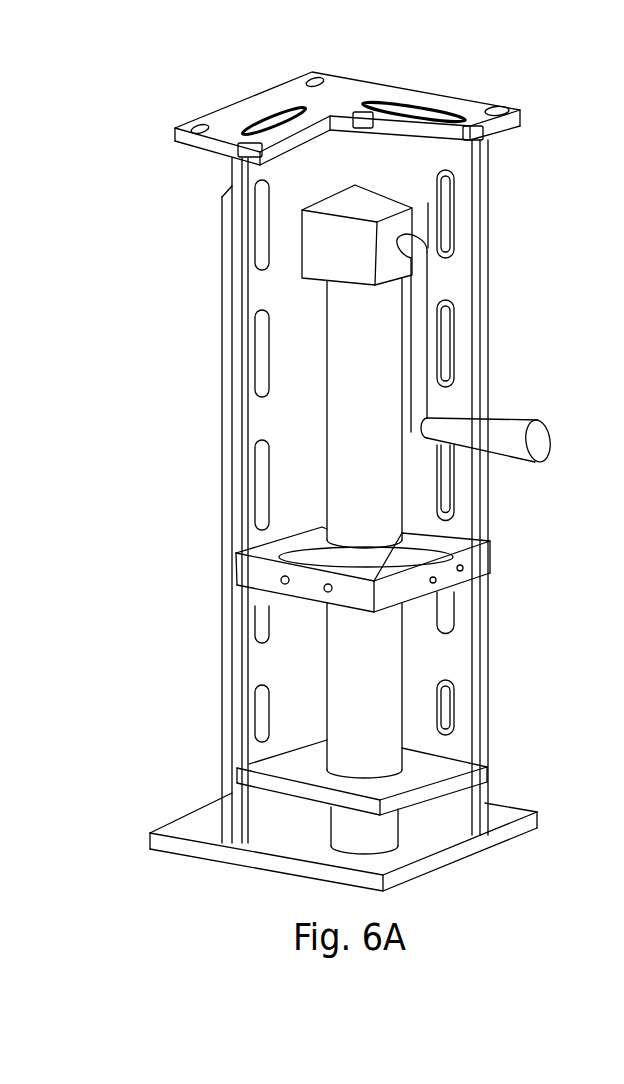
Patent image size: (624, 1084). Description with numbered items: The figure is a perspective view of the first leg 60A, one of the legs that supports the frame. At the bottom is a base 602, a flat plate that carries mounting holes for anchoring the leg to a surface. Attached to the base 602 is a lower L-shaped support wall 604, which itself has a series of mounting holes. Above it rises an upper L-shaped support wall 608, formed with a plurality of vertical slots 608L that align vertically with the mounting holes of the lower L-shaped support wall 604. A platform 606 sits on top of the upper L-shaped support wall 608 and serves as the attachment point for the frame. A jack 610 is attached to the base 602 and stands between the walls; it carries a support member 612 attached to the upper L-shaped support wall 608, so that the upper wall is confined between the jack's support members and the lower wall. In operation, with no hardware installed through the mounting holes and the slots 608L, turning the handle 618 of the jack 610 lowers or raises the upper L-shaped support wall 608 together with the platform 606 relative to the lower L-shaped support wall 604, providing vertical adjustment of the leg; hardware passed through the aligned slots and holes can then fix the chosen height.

The first leg 60A is at (128, 478).
The base 602 is at (525, 832).
The lower L-shaped support wall 604 is at (487, 763).
The platform 606 is at (502, 110).
The upper L-shaped support wall 608 is at (232, 167).
The slots 608L is at (268, 344).
The jack 610 is at (395, 204).
The support member 612 is at (490, 557).
The handle 618 is at (550, 440).